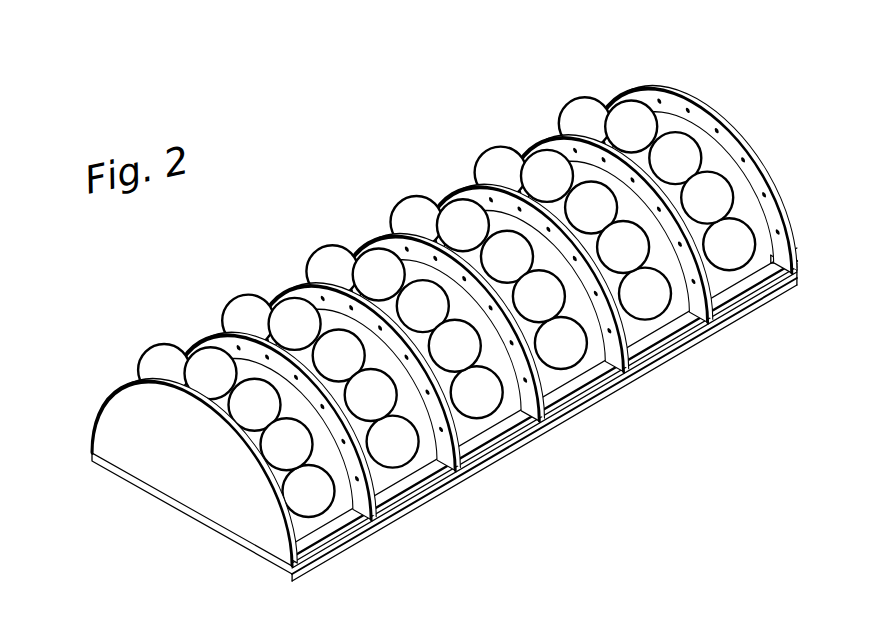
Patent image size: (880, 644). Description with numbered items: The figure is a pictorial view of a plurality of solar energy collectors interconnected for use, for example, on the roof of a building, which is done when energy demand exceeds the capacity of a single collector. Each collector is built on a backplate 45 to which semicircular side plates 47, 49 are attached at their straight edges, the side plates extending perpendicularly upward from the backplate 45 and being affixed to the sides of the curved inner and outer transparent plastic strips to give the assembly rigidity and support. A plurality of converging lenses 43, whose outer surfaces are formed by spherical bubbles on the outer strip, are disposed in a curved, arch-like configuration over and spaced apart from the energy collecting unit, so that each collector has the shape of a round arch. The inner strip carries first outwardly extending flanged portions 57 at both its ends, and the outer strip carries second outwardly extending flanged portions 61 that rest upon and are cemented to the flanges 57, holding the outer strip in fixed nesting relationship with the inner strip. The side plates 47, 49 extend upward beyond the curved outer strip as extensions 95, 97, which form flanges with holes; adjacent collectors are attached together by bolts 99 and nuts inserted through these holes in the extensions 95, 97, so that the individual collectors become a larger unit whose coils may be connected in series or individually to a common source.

The converging lenses 43 is at (320, 351).
The backplate 45 is at (444, 418).
The side plate 47 is at (170, 450).
The side plate 49 is at (694, 149).
The first outwardly extending flanged portions 57 is at (544, 423).
The second outwardly extending flanged portions 61 is at (544, 396).
The extension of side plate 95 is at (544, 406).
The extension of side plate 97 is at (544, 409).
The bolts 99 is at (441, 294).